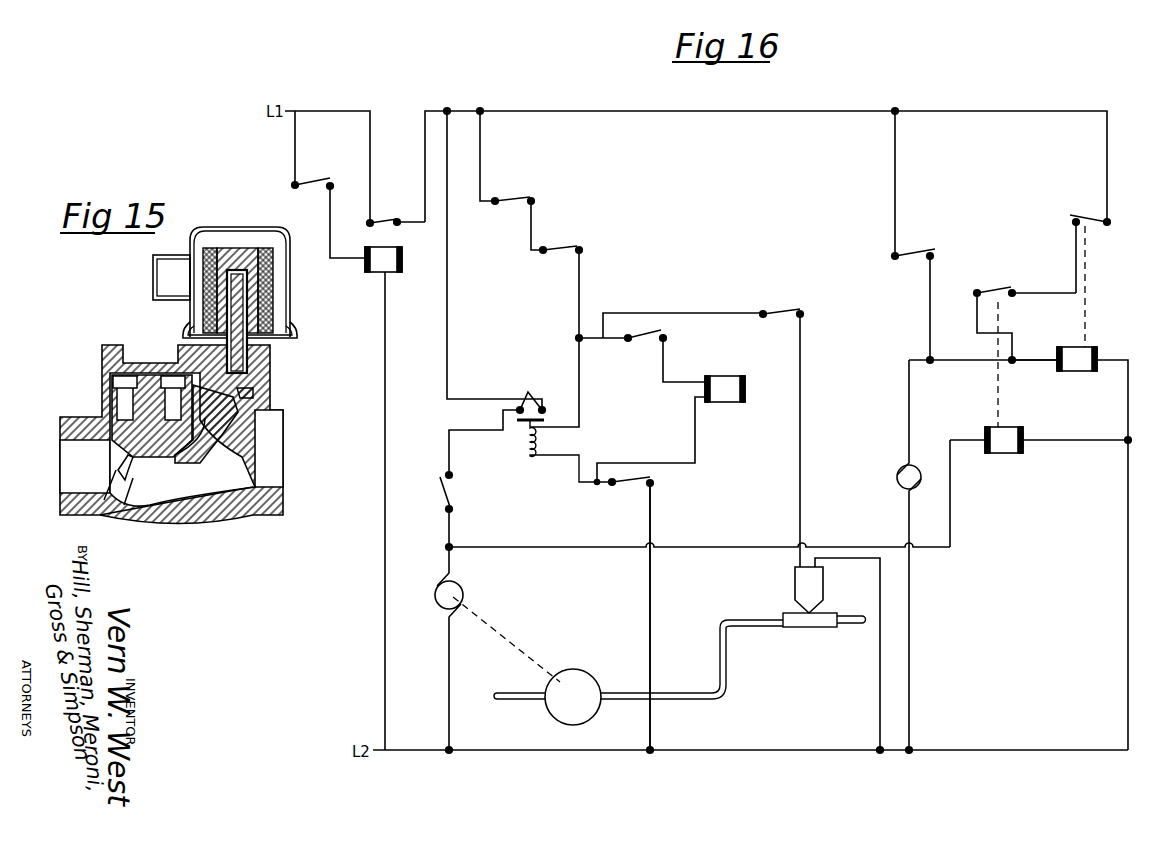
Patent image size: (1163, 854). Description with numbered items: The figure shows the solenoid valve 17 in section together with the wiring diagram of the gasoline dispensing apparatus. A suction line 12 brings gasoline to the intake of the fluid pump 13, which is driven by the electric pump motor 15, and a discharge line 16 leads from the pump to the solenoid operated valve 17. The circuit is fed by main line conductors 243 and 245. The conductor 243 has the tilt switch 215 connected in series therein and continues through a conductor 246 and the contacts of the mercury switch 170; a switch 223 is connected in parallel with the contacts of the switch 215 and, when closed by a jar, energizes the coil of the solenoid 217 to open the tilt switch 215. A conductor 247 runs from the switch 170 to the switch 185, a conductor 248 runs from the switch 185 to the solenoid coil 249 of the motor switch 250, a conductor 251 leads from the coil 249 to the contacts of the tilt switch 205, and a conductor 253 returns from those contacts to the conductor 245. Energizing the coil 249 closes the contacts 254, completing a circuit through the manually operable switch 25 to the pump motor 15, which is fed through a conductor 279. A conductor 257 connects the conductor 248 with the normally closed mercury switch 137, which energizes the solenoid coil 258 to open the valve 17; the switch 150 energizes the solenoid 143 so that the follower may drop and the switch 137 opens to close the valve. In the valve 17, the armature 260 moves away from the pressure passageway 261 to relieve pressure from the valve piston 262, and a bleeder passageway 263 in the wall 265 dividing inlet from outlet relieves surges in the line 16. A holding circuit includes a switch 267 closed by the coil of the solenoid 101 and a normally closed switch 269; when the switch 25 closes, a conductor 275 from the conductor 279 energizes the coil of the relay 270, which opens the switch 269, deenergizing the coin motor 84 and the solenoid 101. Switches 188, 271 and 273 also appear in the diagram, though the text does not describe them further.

In FIG. 16, the suction line 12 is at (526, 694).
In FIG. 16, the fluid pump 13 is at (591, 682).
In FIG. 16, the pump motor 15 is at (441, 600).
In FIG. 16, the discharge line 16 is at (742, 619).
In FIG. 15, the solenoid operated valve 17 is at (299, 422).
In FIG. 16, the solenoid operated valve 17 is at (812, 627).
In FIG. 16, the switch 25 is at (441, 501).
In FIG. 16, the coin motor 84 is at (899, 493).
In FIG. 16, the solenoid 101 is at (1069, 347).
In FIG. 16, the normally closed mercury switch 137 is at (780, 313).
In FIG. 16, the solenoid 143 is at (717, 376).
In FIG. 16, the switch 150 is at (650, 338).
In FIG. 16, the mercury switch 170 is at (511, 200).
In FIG. 16, the switch 185 is at (572, 248).
In FIG. 16, the switch 188 is at (912, 253).
In FIG. 16, the tilt switch 205 is at (635, 479).
In FIG. 16, the tilt switch 215 is at (386, 223).
In FIG. 16, the solenoid 217 is at (397, 272).
In FIG. 16, the switch 223 is at (306, 182).
In FIG. 16, the main line conductor 243 is at (326, 111).
In FIG. 16, the main line conductor 245 is at (566, 751).
In FIG. 16, the conductor 246 is at (482, 165).
In FIG. 16, the conductor 247 is at (534, 230).
In FIG. 16, the conductor 248 is at (578, 356).
In FIG. 16, the solenoid coil 249 is at (525, 459).
In FIG. 16, the motor switch 250 is at (518, 425).
In FIG. 16, the conductor 251 is at (587, 488).
In FIG. 16, the conductor 253 is at (650, 574).
In FIG. 16, the contacts 254 is at (496, 262).
In FIG. 16, the conductor 257 is at (668, 313).
In FIG. 15, the solenoid coil 258 is at (290, 293).
In FIG. 16, the solenoid coil 258 is at (795, 581).
In FIG. 15, the armature 260 is at (250, 380).
In FIG. 15, the pressure passageway 261 is at (250, 398).
In FIG. 15, the valve piston 262 is at (112, 400).
In FIG. 15, the bleeder passageway 263 is at (116, 478).
In FIG. 15, the wall 265 is at (135, 470).
In FIG. 16, the switch 267 is at (1086, 228).
In FIG. 16, the normally closed switch 269 is at (987, 292).
In FIG. 16, the relay 270 is at (992, 455).
In FIG. 16, the conductor 271 is at (976, 358).
In FIG. 16, the conductor 273 is at (1047, 358).
In FIG. 16, the conductor 275 is at (950, 505).
In FIG. 16, the conductor 279 is at (448, 557).